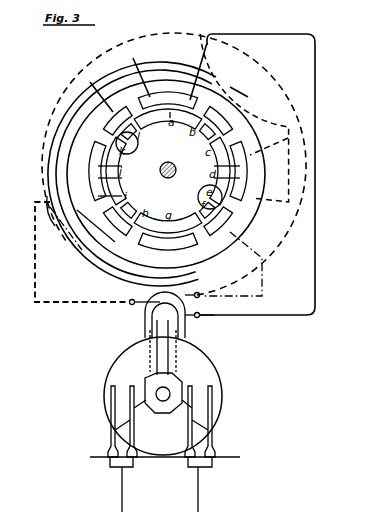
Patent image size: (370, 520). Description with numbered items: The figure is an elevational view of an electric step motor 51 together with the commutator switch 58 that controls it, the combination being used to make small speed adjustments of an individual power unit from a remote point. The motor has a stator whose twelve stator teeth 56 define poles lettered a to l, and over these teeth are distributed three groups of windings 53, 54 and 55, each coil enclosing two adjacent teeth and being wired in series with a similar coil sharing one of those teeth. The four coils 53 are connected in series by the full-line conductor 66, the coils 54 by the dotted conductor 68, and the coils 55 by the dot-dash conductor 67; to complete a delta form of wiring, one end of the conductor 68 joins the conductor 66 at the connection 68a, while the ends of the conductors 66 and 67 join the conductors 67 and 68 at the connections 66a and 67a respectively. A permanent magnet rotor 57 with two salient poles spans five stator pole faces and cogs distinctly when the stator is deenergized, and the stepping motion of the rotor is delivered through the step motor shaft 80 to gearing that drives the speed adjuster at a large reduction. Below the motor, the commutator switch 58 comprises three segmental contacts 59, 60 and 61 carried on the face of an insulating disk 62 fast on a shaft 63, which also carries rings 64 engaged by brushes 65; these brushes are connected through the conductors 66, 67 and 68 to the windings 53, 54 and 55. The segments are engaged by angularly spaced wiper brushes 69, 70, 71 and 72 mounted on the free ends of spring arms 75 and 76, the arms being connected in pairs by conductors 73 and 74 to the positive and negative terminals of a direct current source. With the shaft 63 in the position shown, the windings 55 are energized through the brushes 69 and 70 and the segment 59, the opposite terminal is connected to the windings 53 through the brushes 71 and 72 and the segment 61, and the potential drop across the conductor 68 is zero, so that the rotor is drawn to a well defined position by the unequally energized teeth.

The electric step motor 51 is at (66, 78).
The windings 53 is at (168, 172).
The windings 54 is at (98, 172).
The windings 55 is at (120, 118).
The stator teeth 56 is at (112, 208).
The permanent magnet rotor 57 is at (168, 100).
The commutator switch 58 is at (228, 347).
The segmental contact 59 is at (204, 120).
The segmental contact 60 is at (163, 450).
The segmental contact 61 is at (120, 364).
The insulating disk 62 is at (163, 377).
The shaft 63 is at (172, 384).
The rings 64 is at (148, 322).
The brushes 65 is at (200, 305).
The conductor 66 is at (282, 315).
The connection 66a is at (225, 228).
The conductor 67 is at (262, 270).
The connection 67a is at (62, 223).
The conductor 68 is at (36, 268).
The connection 68a is at (244, 118).
The wiper brush 69 is at (214, 388).
The wiper brush 70 is at (194, 400).
The wiper brush 71 is at (132, 386).
The wiper brush 72 is at (110, 400).
The conductor 73 is at (199, 490).
The conductor 74 is at (121, 490).
The spring arm 75 is at (212, 428).
The spring arm 76 is at (112, 430).
The step motor shaft 80 is at (178, 174).